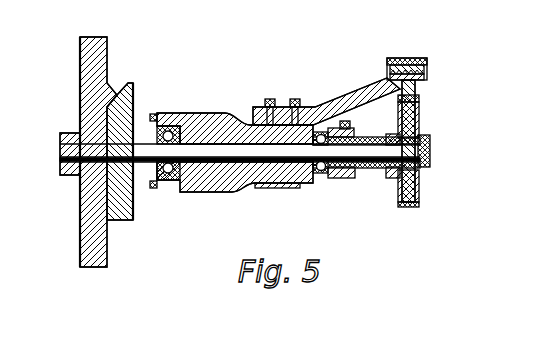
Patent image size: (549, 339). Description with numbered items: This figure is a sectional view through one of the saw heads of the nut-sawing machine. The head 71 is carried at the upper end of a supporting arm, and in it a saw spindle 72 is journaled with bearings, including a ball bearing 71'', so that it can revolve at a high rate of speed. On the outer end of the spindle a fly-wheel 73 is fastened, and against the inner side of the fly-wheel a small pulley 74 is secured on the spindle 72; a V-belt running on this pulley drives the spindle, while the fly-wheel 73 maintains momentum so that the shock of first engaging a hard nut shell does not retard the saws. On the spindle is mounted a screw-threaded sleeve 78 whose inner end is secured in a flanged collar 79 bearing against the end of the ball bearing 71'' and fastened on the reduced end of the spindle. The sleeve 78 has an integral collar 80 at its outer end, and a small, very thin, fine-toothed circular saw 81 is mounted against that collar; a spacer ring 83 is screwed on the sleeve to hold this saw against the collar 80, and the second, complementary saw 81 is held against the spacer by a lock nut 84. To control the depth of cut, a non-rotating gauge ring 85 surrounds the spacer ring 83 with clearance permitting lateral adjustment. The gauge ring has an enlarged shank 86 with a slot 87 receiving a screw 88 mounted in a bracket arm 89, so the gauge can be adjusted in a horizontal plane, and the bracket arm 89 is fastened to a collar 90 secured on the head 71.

The head 71 is at (231, 117).
The ball bearing 71'' is at (338, 171).
The saw spindle 72 is at (211, 194).
The fly-wheel 73 is at (80, 97).
The pulley 74 is at (133, 92).
The screw-threaded sleeve 78 is at (372, 168).
The flanged collar 79 is at (344, 178).
The collar 80 is at (430, 147).
The circular saw 81 is at (400, 109).
The spacer ring 83 is at (422, 127).
The lock nut 84 is at (392, 134).
The gauge ring 85 is at (422, 105).
The enlarged shank 86 is at (412, 58).
The slot 87 is at (428, 78).
The screw 88 is at (427, 65).
The bracket arm 89 is at (362, 92).
The collar 90 is at (285, 100).